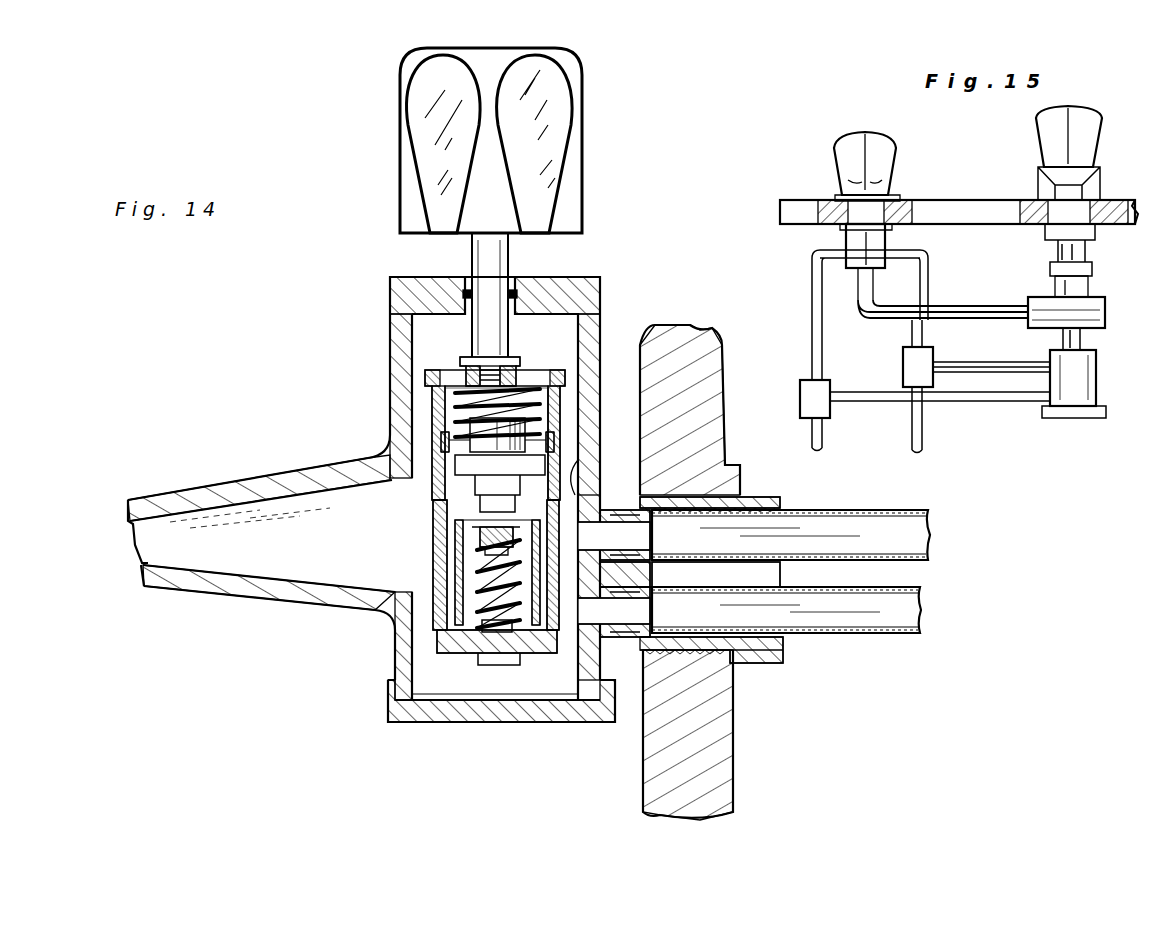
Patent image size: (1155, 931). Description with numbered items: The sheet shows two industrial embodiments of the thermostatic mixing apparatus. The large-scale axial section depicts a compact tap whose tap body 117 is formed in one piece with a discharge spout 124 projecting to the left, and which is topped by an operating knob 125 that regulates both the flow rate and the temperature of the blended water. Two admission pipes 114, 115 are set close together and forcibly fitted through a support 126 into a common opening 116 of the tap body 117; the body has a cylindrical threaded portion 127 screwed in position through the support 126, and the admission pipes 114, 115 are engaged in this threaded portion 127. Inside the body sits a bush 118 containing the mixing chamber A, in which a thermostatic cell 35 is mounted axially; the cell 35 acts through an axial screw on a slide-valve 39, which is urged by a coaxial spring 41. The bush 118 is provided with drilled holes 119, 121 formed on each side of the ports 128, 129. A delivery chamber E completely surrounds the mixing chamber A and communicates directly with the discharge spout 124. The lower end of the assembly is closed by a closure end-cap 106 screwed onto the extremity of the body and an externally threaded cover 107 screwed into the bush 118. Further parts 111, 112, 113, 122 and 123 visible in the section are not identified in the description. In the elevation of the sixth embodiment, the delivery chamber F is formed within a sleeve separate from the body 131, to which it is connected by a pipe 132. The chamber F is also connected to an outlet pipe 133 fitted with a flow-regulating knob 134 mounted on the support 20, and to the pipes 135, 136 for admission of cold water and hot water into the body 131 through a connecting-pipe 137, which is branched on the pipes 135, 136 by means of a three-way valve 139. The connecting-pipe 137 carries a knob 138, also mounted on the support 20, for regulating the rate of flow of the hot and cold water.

In FIG. 14, the operating knob 125 is at (556, 128).
In FIG. 14, the valve stem 113 is at (500, 256).
In FIG. 14, the tap body 117 is at (386, 328).
In FIG. 14, the discharge spout 124 is at (232, 487).
In FIG. 14, the mixing chamber A is at (425, 487).
In FIG. 14, the nut 112 is at (450, 378).
In FIG. 14, the cartridge sleeve 111 is at (562, 380).
In FIG. 14, the thermostatic cell 35 is at (392, 448).
In FIG. 14, the bush 118 is at (428, 537).
In FIG. 14, the slide-valve 39 is at (438, 553).
In FIG. 14, the spring 41 is at (475, 630).
In FIG. 14, the drilled hole 121 is at (580, 660).
In FIG. 14, the delivery chamber E is at (396, 665).
In FIG. 14, the closure end-cap 106 is at (393, 724).
In FIG. 14, the externally threaded cover 107 is at (455, 705).
In FIG. 14, the drilled hole 119 is at (590, 462).
In FIG. 14, the port 128 is at (590, 485).
In FIG. 14, the support 126 is at (655, 340).
In FIG. 14, the upper union fitting 122 is at (605, 535).
In FIG. 14, the lower union fitting 123 is at (605, 610).
In FIG. 14, the common opening 116 is at (685, 528).
In FIG. 14, the admission pipe 114 is at (810, 509).
In FIG. 14, the admission pipe 115 is at (838, 633).
In FIG. 14, the cylindrical threaded portion 127 is at (776, 660).
In FIG. 14, the port 129 is at (627, 676).
In FIG. 15, the support 20 is at (960, 200).
In FIG. 15, the knob 138 is at (882, 165).
In FIG. 15, the flow-regulating knob 134 is at (1085, 150).
In FIG. 15, the three-way valve 139 is at (856, 244).
In FIG. 15, the outlet pipe 133 is at (1090, 255).
In FIG. 15, the connecting-pipe 137 is at (968, 312).
In FIG. 15, the delivery chamber F is at (1100, 310).
In FIG. 15, the pipe 132 is at (1082, 340).
In FIG. 15, the body 131 is at (1095, 375).
In FIG. 15, the admission pipe 135 is at (980, 362).
In FIG. 15, the admission pipe 136 is at (990, 398).